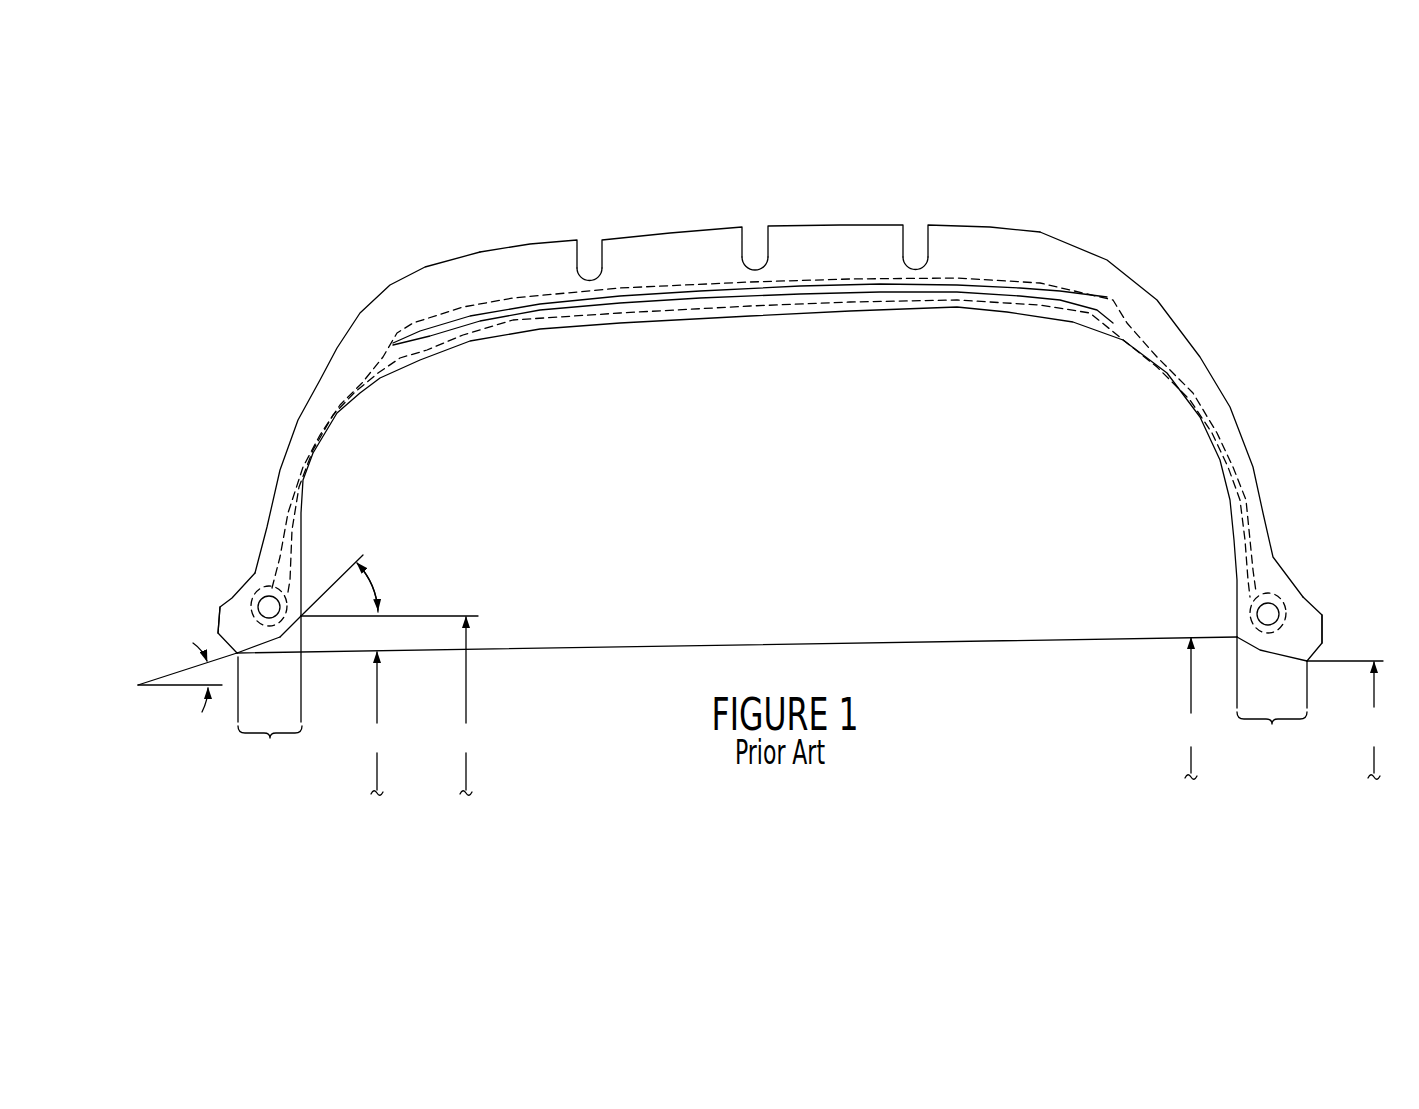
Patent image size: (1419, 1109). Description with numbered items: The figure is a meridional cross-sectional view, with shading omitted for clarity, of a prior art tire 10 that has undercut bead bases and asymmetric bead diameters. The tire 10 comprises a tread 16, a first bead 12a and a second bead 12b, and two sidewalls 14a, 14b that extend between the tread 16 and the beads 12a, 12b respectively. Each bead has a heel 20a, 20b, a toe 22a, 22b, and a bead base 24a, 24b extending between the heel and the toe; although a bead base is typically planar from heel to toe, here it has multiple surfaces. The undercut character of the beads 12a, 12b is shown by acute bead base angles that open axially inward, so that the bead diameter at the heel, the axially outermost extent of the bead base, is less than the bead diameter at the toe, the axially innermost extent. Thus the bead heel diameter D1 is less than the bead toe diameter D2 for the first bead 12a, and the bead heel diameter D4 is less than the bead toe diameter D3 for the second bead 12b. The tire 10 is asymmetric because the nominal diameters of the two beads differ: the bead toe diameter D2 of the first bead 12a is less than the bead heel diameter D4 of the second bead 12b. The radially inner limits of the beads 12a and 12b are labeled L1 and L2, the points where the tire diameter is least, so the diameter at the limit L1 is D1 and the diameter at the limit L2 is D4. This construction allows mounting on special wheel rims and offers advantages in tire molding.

The tire 10 is at (970, 199).
The tread 16 is at (808, 230).
The sidewall 14a is at (1218, 408).
The sidewall 14b is at (338, 365).
The first bead 12a is at (1290, 570).
The second bead 12b is at (243, 535).
The toe 22a is at (1237, 638).
The toe 22b is at (302, 617).
The heel 20a is at (1308, 662).
The heel 20b is at (237, 657).
The bead base 24a is at (1272, 695).
The bead base 24b is at (270, 692).
The radially inner limit L1 is at (1310, 632).
The radially inner limit L2 is at (237, 612).
The bead heel diameter D1 is at (1376, 720).
The bead toe diameter D2 is at (1195, 708).
The bead toe diameter D3 is at (468, 706).
The bead heel diameter D4 is at (378, 723).